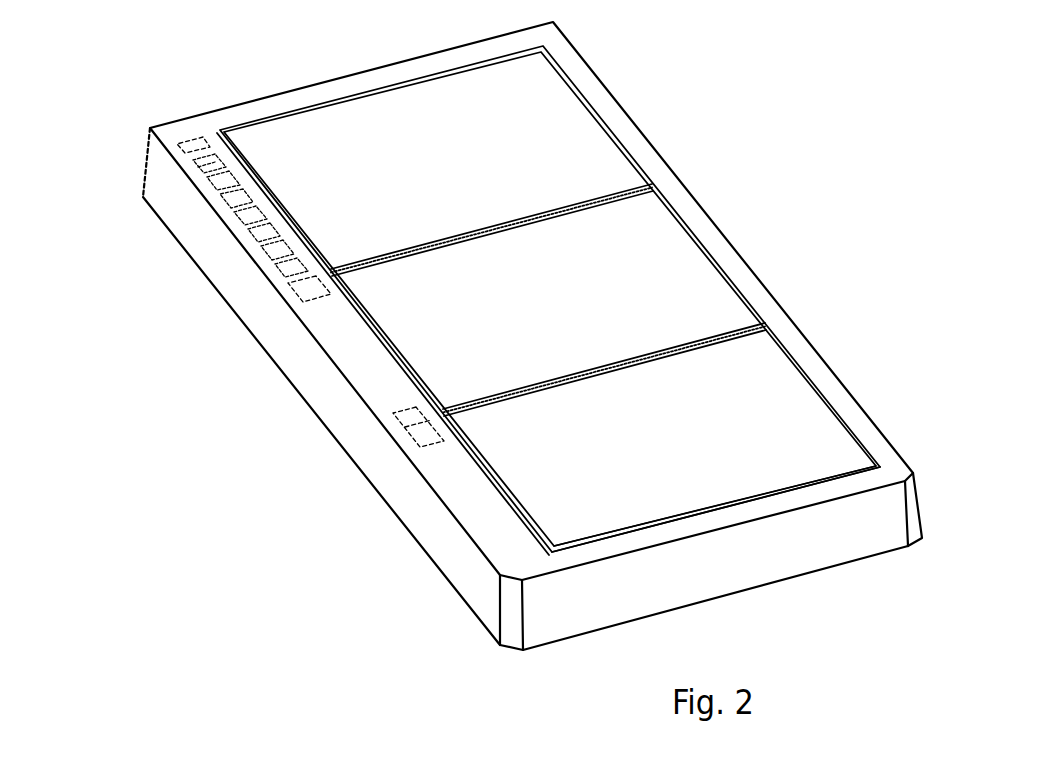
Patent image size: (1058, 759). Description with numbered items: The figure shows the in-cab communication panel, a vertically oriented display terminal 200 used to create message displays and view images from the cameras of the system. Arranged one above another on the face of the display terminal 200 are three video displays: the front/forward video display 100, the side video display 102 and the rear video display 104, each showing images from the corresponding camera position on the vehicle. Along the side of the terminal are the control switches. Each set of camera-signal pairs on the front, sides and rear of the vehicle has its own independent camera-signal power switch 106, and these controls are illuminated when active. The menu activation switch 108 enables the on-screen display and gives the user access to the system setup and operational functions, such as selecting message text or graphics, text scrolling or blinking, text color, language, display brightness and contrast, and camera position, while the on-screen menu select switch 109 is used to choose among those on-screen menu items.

The front/forward video display 100 is at (497, 155).
The side video display 102 is at (588, 295).
The rear video display 104 is at (663, 447).
The camera-signal power switch 106 is at (183, 143).
The menu activation switch 108 is at (263, 252).
The on-screen menu select switch 109 is at (198, 167).
The display terminal 200 is at (437, 577).